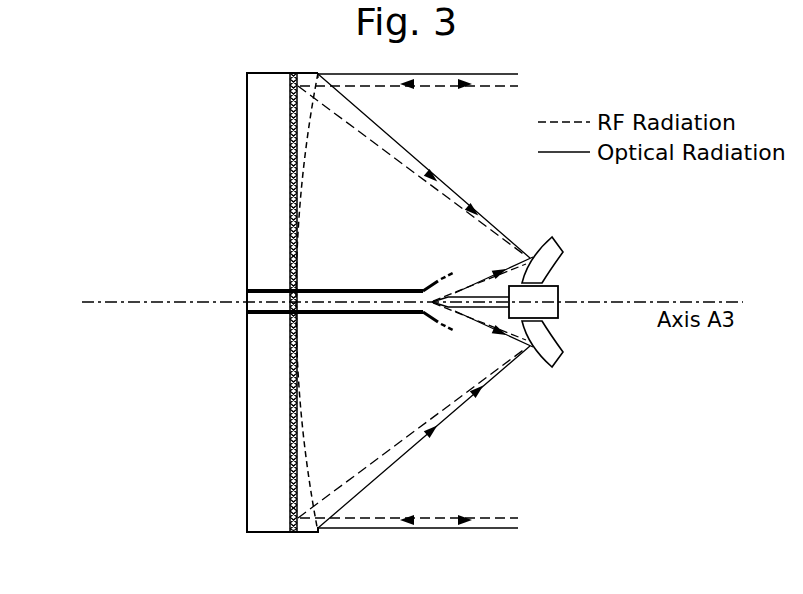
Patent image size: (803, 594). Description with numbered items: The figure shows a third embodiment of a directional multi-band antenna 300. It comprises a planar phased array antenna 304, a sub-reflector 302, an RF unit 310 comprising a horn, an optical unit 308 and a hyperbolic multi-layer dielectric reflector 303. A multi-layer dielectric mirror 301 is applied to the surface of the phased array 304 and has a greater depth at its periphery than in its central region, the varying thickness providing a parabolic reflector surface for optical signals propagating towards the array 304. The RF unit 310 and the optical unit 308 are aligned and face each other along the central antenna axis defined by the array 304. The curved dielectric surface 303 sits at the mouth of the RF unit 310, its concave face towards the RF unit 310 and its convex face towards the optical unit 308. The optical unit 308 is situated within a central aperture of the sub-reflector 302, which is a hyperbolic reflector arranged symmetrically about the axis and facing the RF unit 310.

The directional multi-band antenna 300 is at (120, 248).
The multi-layer dielectric mirror 301 is at (304, 132).
The sub-reflector 302 is at (552, 355).
The hyperbolic multi-layer dielectric reflector 303 is at (452, 315).
The planar phased array antenna 304 is at (290, 475).
The optical unit 308 is at (552, 297).
The RF unit 310 is at (273, 295).